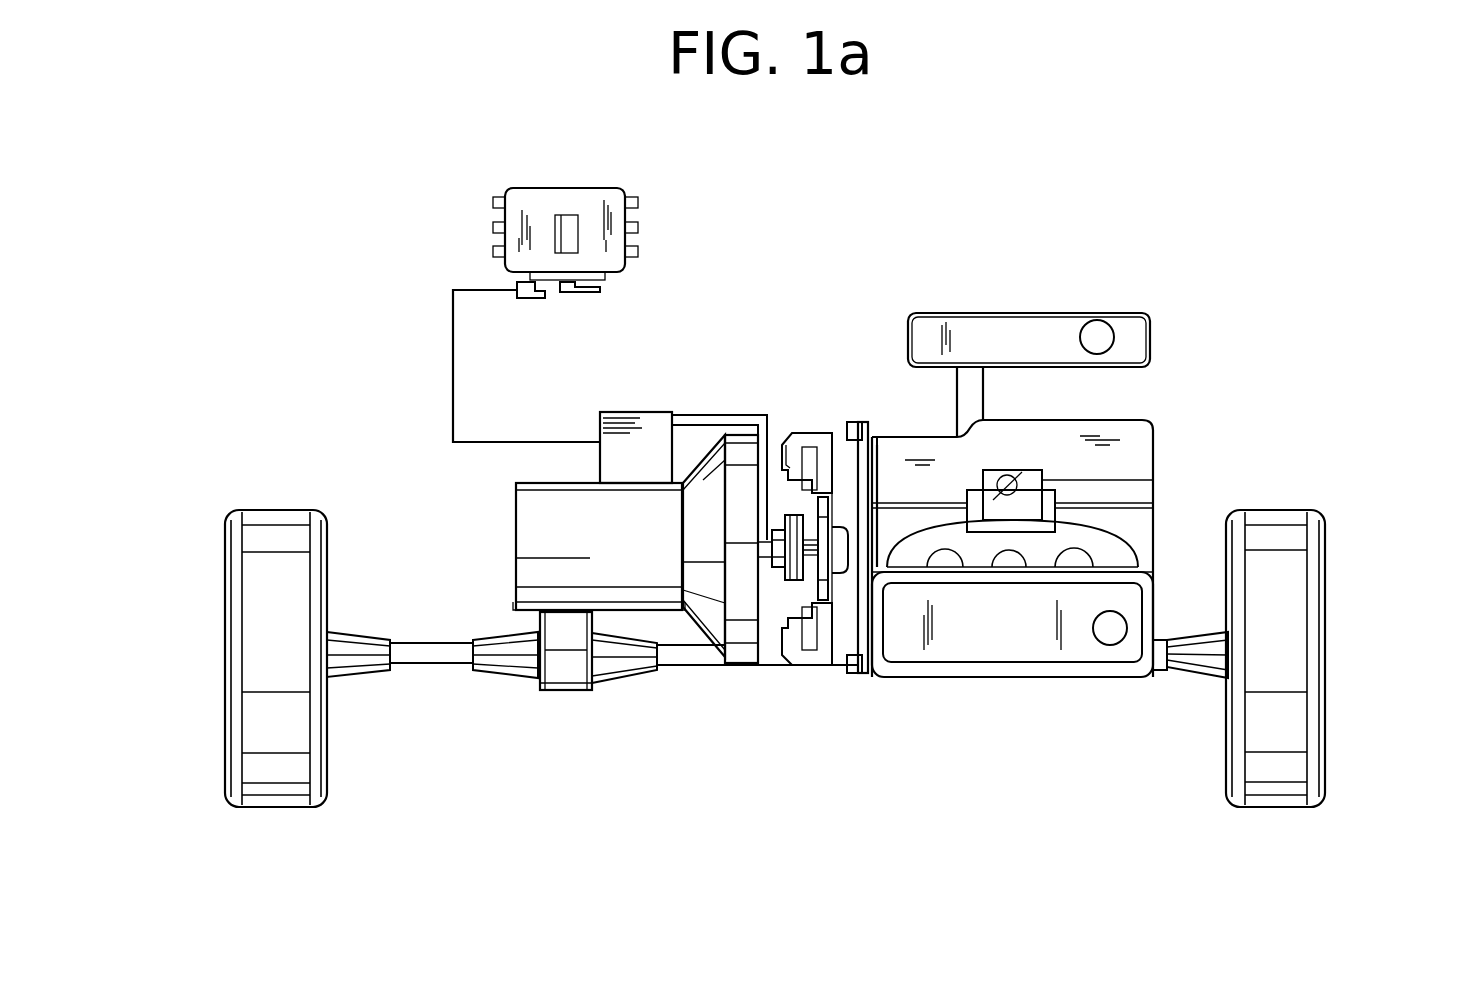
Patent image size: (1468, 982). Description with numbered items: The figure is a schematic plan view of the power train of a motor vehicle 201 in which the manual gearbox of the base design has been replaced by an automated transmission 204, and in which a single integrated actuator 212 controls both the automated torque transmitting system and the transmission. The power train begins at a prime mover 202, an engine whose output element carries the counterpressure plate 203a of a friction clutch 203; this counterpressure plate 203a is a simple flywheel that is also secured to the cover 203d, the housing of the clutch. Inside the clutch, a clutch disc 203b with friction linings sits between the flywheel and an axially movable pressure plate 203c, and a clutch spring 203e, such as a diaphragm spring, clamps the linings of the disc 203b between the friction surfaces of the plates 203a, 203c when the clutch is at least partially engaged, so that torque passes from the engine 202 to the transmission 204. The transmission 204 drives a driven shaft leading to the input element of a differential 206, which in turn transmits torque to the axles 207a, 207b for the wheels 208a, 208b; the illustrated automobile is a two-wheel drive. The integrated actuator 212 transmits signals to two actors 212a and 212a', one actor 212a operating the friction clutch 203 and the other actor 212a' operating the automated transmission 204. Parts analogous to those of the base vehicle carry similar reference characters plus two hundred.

The motor vehicle 201 is at (756, 674).
The prime mover 202 is at (1142, 443).
The friction clutch 203 is at (837, 418).
The counterpressure plate 203a is at (843, 637).
The clutch disc 203b is at (873, 473).
The pressure plate 203c is at (798, 437).
The cover 203d is at (807, 665).
The clutch spring 203e is at (803, 494).
The automated transmission 204 is at (533, 552).
The differential 206 is at (572, 685).
The axle 207a is at (438, 653).
The axle 207b is at (1152, 665).
The wheel 208a is at (250, 662).
The wheel 208b is at (1293, 643).
The integrated actuator 212 is at (541, 197).
The actor 212a is at (678, 496).
The actor 212a' is at (533, 366).